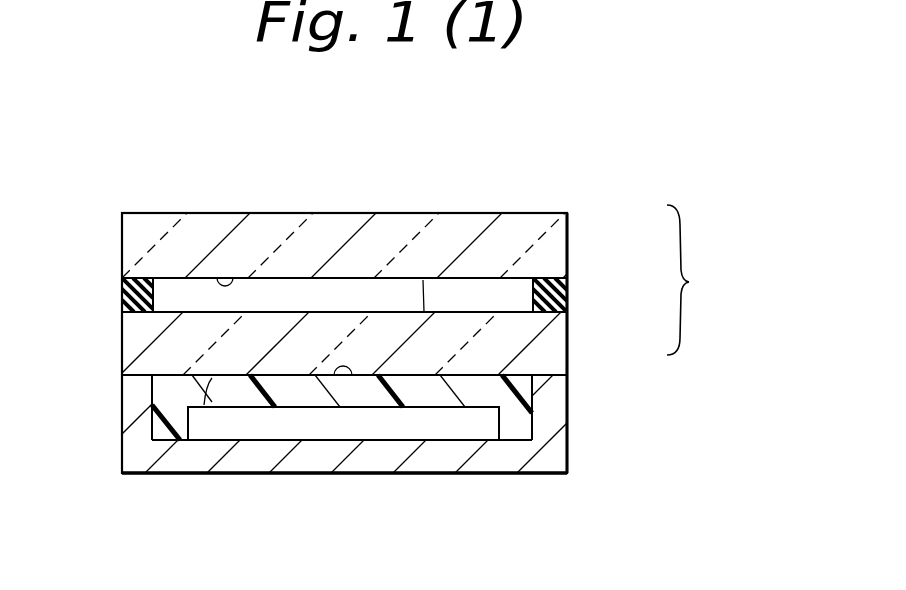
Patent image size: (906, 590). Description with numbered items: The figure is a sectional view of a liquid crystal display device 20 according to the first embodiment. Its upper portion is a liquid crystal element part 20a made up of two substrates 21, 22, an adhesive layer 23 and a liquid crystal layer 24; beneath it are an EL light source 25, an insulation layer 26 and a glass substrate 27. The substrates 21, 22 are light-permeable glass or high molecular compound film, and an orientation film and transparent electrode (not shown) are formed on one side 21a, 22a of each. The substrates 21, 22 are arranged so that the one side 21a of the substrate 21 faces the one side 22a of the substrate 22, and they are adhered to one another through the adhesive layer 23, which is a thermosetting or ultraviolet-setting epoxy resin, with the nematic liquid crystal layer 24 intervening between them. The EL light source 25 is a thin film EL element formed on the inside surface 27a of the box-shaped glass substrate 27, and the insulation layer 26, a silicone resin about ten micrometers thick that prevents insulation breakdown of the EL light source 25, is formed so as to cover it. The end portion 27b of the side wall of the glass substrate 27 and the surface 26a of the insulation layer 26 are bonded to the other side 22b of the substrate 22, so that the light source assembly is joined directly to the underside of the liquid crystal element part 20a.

The liquid crystal display device 20 is at (354, 157).
The liquid crystal element part 20a is at (714, 280).
The substrate 21 is at (567, 233).
The one side of substrate 21a is at (234, 278).
The substrate 22 is at (557, 340).
The one side of substrate 22a is at (423, 280).
The other side of substrate 22b is at (204, 405).
The adhesive layer 23 is at (122, 278).
The liquid crystal layer 24 is at (567, 262).
The EL light source 25 is at (488, 422).
The insulation layer 26 is at (170, 392).
The surface of insulation layer 26a is at (337, 378).
The glass substrate 27 is at (137, 447).
The inside surface of glass substrate 27a is at (469, 440).
The end portion of side wall 27b is at (143, 373).